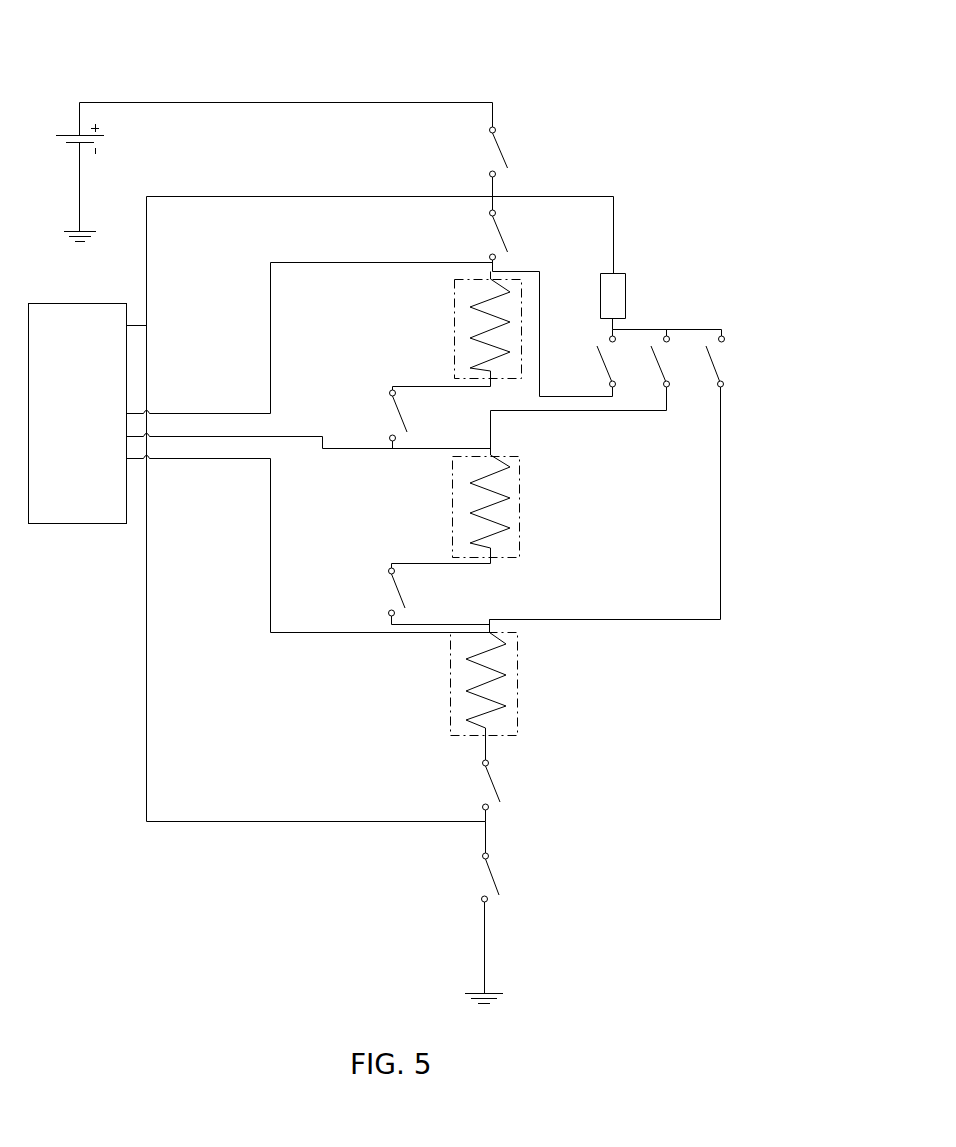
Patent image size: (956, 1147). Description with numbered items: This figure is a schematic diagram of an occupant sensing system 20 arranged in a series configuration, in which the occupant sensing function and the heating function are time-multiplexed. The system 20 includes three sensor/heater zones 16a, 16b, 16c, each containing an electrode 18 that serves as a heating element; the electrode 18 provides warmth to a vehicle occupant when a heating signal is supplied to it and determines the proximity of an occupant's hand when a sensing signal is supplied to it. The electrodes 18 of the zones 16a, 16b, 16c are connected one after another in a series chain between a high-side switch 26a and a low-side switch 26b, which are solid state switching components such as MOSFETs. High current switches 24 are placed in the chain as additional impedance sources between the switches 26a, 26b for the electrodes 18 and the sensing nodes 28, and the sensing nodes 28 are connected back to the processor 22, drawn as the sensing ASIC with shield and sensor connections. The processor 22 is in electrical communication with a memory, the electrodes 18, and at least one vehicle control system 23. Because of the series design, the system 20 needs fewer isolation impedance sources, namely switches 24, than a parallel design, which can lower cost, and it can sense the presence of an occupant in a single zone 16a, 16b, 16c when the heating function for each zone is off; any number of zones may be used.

The vehicle component heating system 20 is at (137, 66).
The processor 22 is at (105, 302).
The vehicle control system 23 is at (63, 302).
The high current switch 24 is at (515, 222).
The high-side switch 26a is at (517, 135).
The low-side switch 26b is at (508, 868).
The sensing node 28 is at (478, 259).
The electrode 18 is at (483, 330).
The sensor/heater zone 16a is at (453, 350).
The sensor/heater zone 16b is at (518, 537).
The sensor/heater zone 16c is at (517, 720).